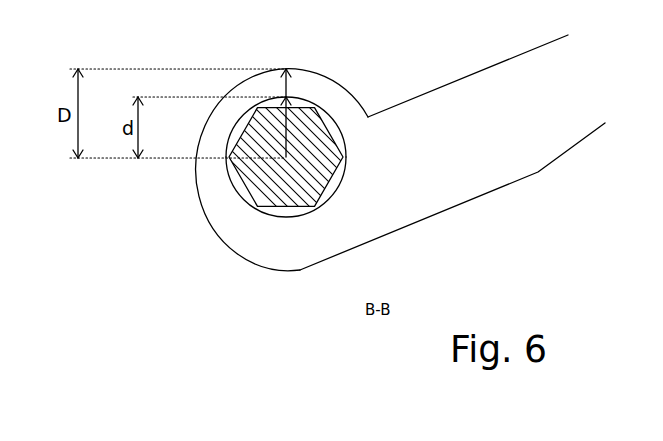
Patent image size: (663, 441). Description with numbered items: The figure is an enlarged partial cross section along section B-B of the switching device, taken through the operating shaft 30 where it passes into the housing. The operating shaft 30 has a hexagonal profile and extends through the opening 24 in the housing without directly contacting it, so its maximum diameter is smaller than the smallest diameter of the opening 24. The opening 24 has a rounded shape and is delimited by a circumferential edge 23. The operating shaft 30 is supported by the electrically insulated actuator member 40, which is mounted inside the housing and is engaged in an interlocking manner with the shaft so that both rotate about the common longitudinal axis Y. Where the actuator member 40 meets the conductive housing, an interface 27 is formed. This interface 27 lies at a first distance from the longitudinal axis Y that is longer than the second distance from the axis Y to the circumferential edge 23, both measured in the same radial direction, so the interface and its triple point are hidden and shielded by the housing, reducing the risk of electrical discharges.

The interface 27 is at (315, 71).
The actuator member 40 is at (457, 90).
The circumferential edge 23 is at (338, 119).
The opening 24 is at (336, 188).
The operating shaft 30 is at (287, 195).
The longitudinal axis Y is at (286, 157).